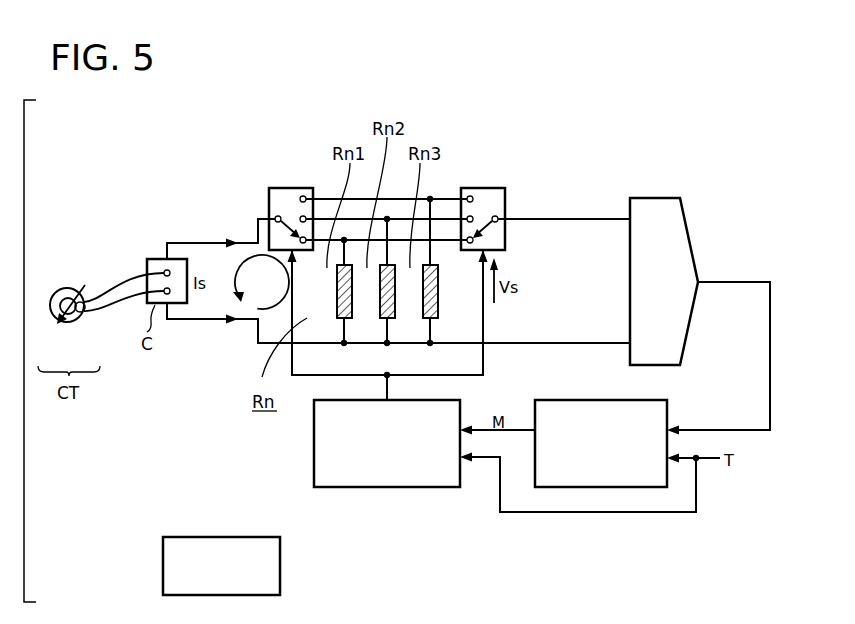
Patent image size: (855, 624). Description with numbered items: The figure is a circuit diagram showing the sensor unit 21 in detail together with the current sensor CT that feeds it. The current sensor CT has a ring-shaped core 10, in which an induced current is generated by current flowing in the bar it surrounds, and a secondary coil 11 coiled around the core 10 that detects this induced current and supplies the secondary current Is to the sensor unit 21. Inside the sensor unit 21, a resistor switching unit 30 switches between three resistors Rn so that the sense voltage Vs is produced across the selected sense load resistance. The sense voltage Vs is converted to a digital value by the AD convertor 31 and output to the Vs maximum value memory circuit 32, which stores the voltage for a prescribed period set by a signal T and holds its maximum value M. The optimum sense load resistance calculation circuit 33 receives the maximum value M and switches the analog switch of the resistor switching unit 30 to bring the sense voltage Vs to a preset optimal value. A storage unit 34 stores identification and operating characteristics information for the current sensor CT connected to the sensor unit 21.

The core 10 is at (48, 313).
The secondary coil 11 is at (88, 317).
The sensor unit 21 is at (722, 210).
The resistor switching unit 30 is at (292, 188).
The AD convertor 31 is at (665, 198).
The Vs maximum value memory circuit 32 is at (595, 398).
The optimum sense load resistance calculation circuit 33 is at (388, 487).
The storage unit 34 is at (221, 537).